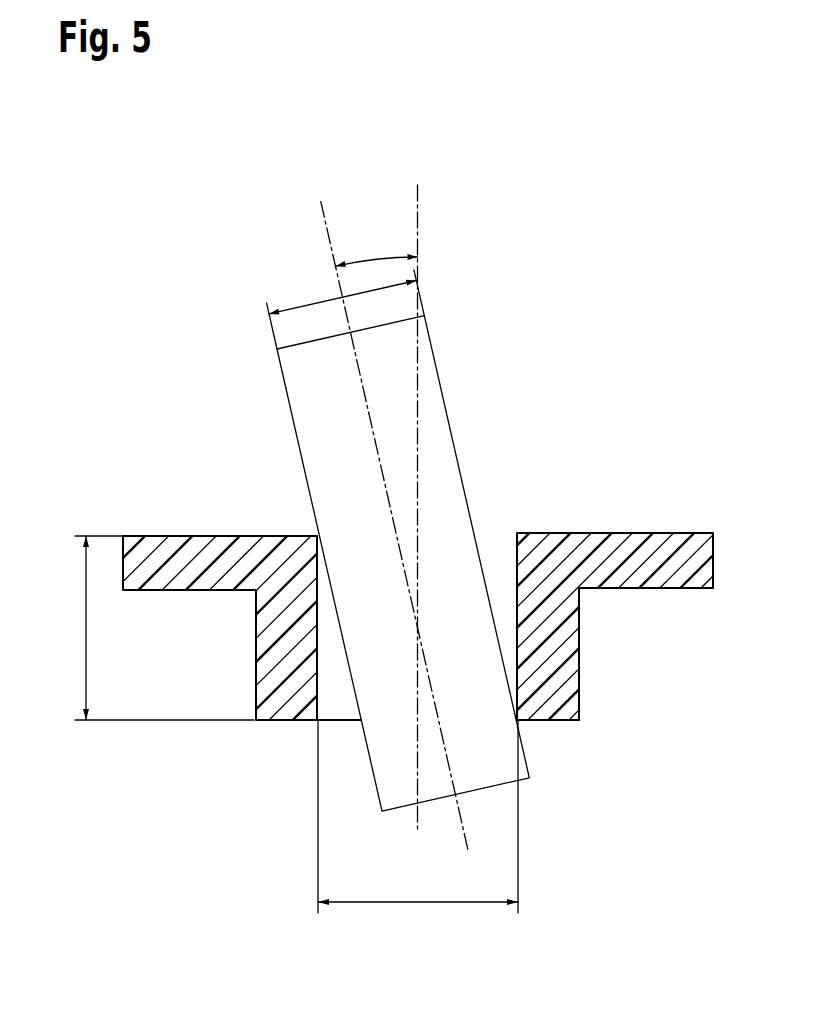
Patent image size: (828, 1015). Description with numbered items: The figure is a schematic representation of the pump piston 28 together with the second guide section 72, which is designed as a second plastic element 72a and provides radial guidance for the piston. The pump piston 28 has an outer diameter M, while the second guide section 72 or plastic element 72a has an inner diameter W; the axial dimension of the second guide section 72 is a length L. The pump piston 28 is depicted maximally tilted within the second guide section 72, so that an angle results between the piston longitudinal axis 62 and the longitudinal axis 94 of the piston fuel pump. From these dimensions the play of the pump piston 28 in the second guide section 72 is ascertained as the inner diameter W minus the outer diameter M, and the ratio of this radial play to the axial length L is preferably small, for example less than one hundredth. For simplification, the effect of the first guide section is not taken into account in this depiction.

The pump piston 28 is at (437, 419).
The piston longitudinal axis 62 is at (321, 216).
The longitudinal axis of piston fuel pump 94 is at (419, 198).
The second guide section 72 is at (533, 553).
The second plastic element 72a is at (570, 680).
The outer diameter M is at (313, 303).
The length L is at (86, 648).
The inner diameter W is at (421, 903).